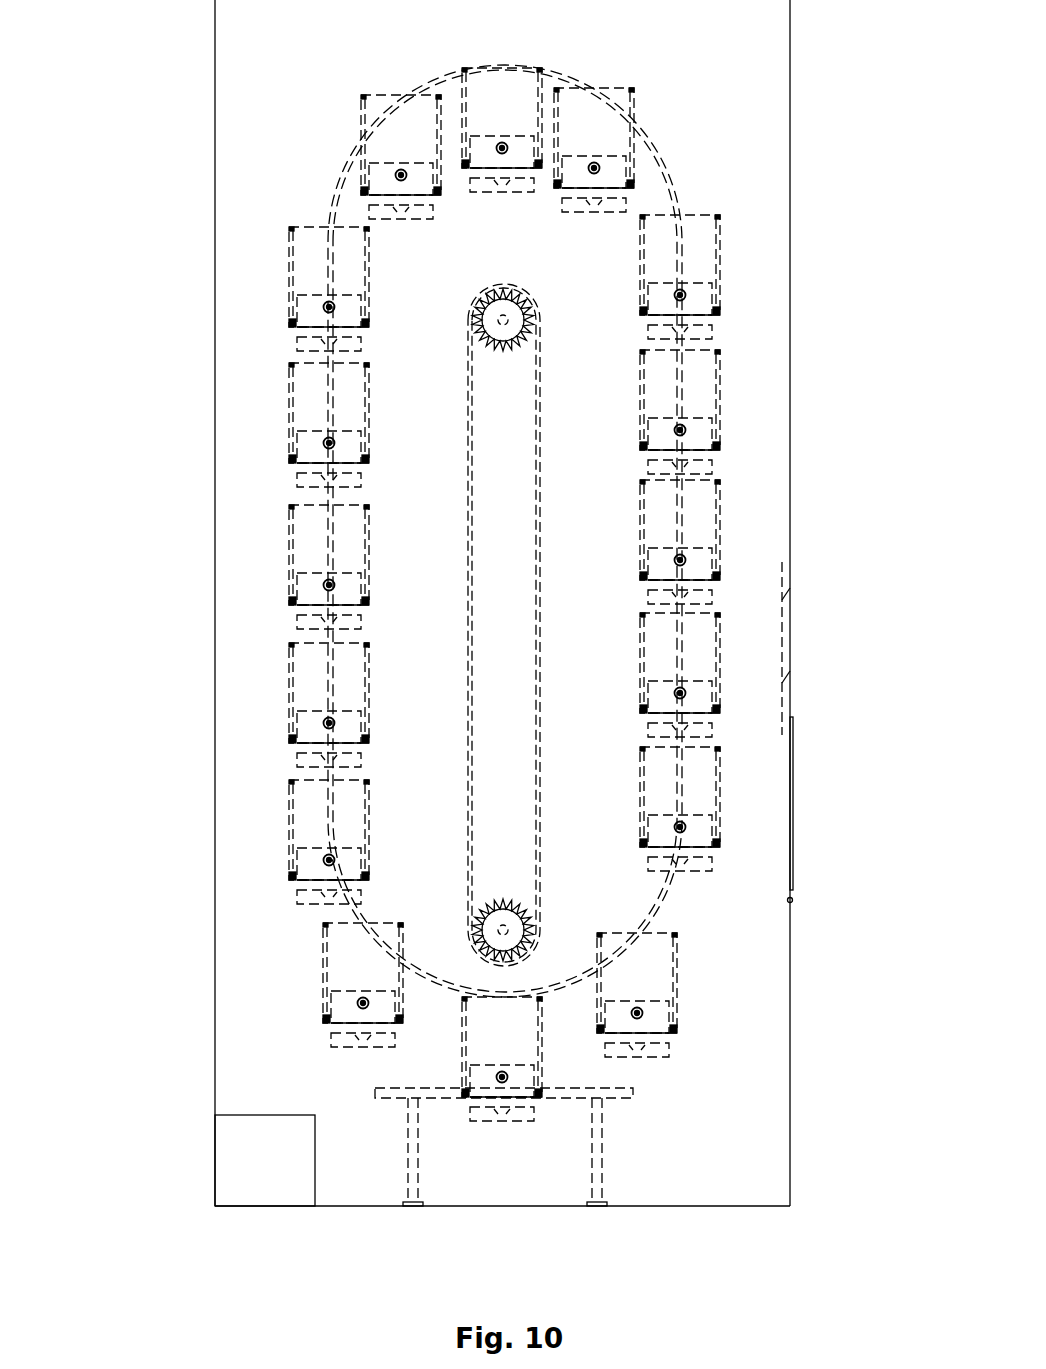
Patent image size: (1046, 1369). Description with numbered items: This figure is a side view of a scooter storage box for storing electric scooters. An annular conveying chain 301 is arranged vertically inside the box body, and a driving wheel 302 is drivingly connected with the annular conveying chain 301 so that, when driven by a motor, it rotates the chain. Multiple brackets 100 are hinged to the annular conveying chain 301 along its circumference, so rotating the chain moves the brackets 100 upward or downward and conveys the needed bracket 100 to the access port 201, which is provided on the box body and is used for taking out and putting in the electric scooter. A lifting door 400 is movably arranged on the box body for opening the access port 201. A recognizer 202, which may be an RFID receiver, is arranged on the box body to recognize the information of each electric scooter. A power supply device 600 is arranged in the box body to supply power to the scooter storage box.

The bracket 100 is at (707, 287).
The annular conveying chain 301 is at (338, 180).
The driving wheel 302 is at (487, 945).
The lifting door 400 is at (782, 612).
The access port 201 is at (793, 782).
The recognizer 202 is at (793, 900).
The power supply device 600 is at (309, 1152).